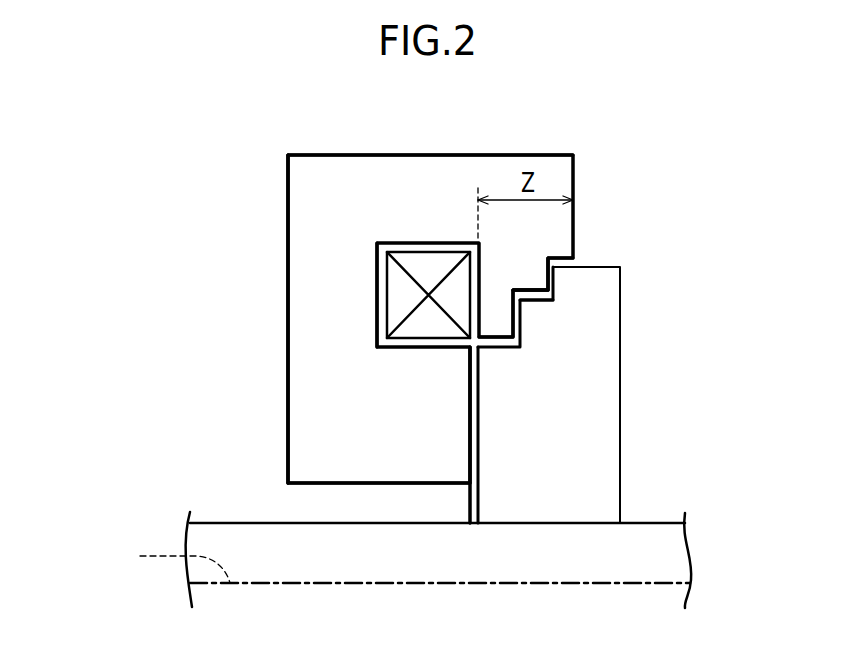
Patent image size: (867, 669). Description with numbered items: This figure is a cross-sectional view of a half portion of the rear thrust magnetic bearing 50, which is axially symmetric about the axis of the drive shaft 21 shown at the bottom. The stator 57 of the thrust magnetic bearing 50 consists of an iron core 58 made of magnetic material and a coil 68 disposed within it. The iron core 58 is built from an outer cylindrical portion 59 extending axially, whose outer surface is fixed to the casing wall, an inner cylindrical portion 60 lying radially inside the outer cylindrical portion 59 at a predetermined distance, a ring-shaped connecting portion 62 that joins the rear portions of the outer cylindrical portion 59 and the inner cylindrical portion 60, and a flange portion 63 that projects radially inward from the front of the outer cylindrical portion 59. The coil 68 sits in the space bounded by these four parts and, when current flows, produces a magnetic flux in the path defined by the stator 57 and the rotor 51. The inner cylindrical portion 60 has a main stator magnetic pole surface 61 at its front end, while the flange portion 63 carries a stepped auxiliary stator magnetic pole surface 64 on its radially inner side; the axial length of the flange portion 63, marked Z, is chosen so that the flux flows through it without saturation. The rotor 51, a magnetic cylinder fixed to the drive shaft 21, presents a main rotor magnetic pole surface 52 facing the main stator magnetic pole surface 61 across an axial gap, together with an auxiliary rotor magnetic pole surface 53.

The drive shaft 21 is at (243, 522).
The thrust magnetic bearing 50 is at (191, 211).
The rotor 51 is at (623, 360).
The main rotor magnetic pole surface 52 is at (480, 424).
The auxiliary rotor magnetic pole surface 53 is at (519, 318).
The stator 57 is at (285, 287).
The iron core 58 is at (285, 350).
The outer cylindrical portion 59 is at (410, 170).
The inner cylindrical portion 60 is at (347, 423).
The main stator magnetic pole surface 61 is at (470, 451).
The connecting portion 62 is at (330, 283).
The flange portion 63 is at (512, 272).
The auxiliary stator magnetic pole surface 64 is at (532, 290).
The coil 68 is at (425, 322).